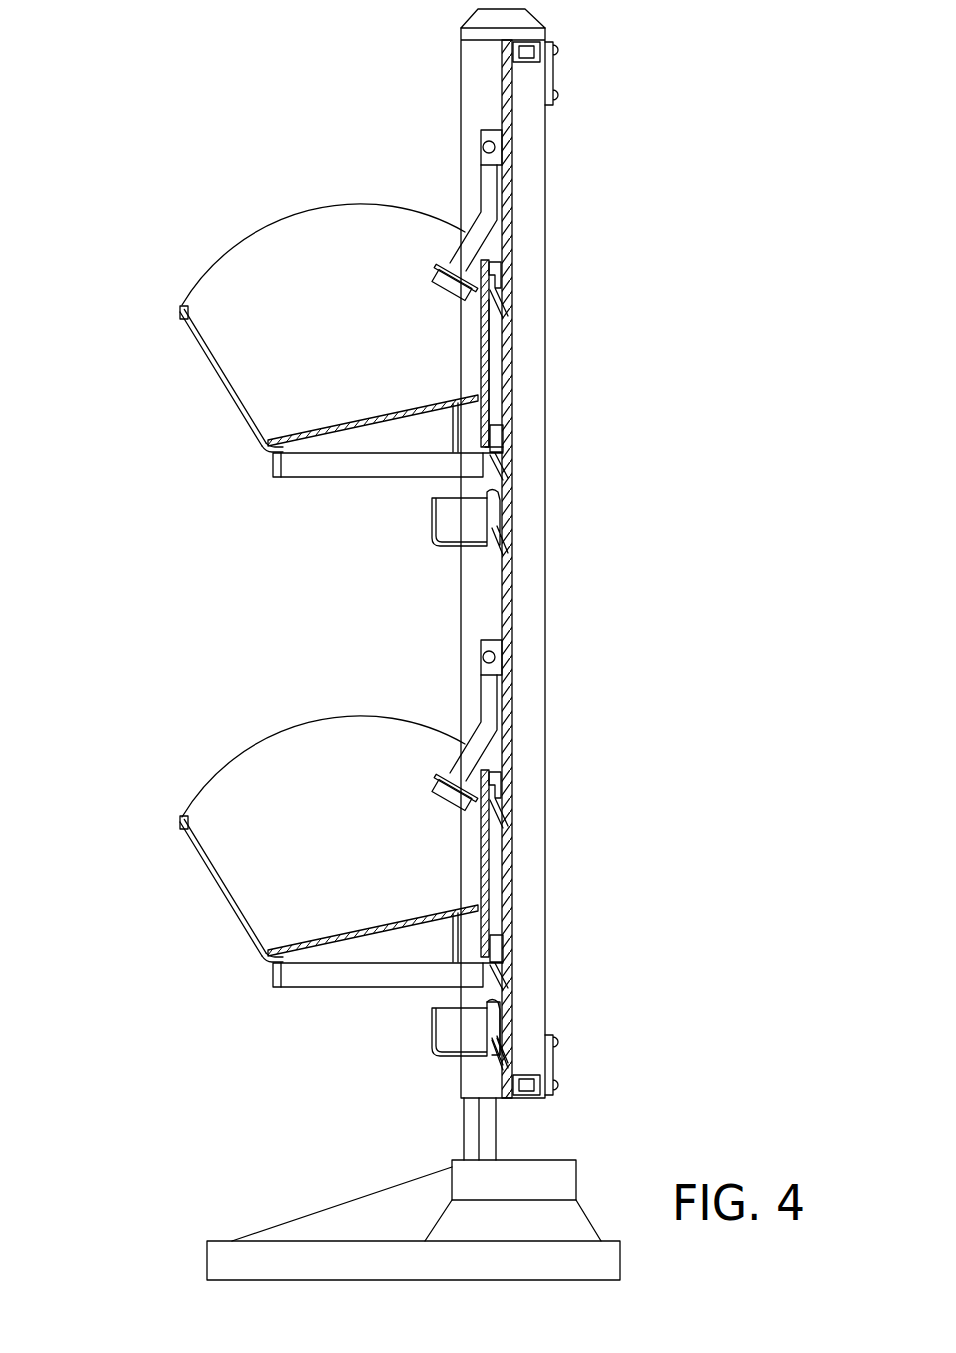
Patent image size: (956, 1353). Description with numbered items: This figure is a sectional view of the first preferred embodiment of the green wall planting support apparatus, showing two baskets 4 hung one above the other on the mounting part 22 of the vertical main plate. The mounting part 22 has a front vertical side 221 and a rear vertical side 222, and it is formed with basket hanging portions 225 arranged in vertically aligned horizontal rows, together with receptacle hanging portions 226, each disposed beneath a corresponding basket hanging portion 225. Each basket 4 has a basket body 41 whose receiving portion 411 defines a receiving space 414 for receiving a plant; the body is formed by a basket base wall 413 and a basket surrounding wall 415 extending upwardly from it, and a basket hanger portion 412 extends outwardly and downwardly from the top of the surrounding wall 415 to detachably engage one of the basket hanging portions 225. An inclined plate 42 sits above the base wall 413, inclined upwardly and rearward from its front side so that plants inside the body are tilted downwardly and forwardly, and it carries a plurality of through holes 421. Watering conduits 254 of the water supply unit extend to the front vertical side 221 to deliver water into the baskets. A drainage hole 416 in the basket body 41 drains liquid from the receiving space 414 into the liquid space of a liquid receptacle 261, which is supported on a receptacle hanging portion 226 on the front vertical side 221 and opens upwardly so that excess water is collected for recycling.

The basket 4 is at (353, 650).
The mounting part 22 is at (548, 492).
The front vertical side 221 is at (503, 590).
The rear vertical side 222 is at (513, 348).
The basket hanging portion 225 is at (497, 288).
The receptacle hanging portion 226 is at (498, 1037).
The watering conduit 254 is at (488, 192).
The liquid receptacle 261 is at (432, 510).
The basket body 41 is at (390, 760).
The receiving portion 411 is at (238, 914).
The basket hanger portion 412 is at (513, 748).
The basket base wall 413 is at (377, 988).
The receiving space 414 is at (368, 770).
The basket surrounding wall 415 is at (215, 873).
The drainage hole 416 is at (470, 442).
The inclined plate 42 is at (359, 623).
The through hole 421 is at (317, 955).